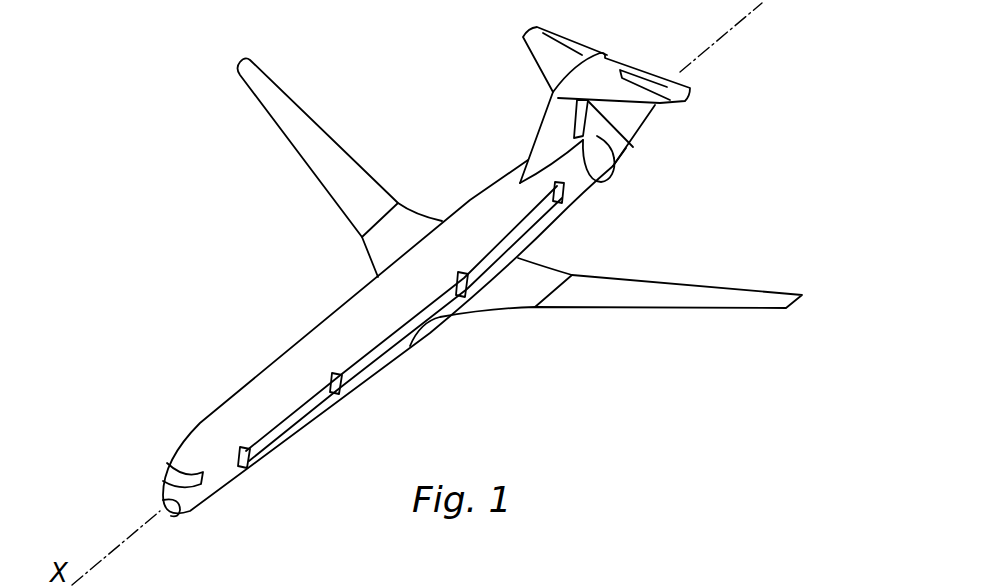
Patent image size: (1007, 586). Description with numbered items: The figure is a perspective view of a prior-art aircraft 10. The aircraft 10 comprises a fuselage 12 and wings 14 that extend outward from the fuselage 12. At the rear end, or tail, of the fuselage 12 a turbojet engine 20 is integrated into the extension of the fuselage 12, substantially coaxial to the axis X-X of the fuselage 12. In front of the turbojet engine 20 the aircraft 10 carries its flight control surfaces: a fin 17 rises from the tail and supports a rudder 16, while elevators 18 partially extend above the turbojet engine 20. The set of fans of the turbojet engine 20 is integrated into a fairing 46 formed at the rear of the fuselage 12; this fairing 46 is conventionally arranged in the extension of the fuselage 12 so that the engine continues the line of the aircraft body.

The aircraft 10 is at (225, 228).
The fuselage 12 is at (247, 400).
The wings 14 is at (663, 296).
The rudder 16 is at (627, 145).
The fin 17 is at (555, 128).
The elevators 18 is at (644, 82).
The turbojet engine 20 is at (627, 165).
The fairing 46 is at (600, 140).